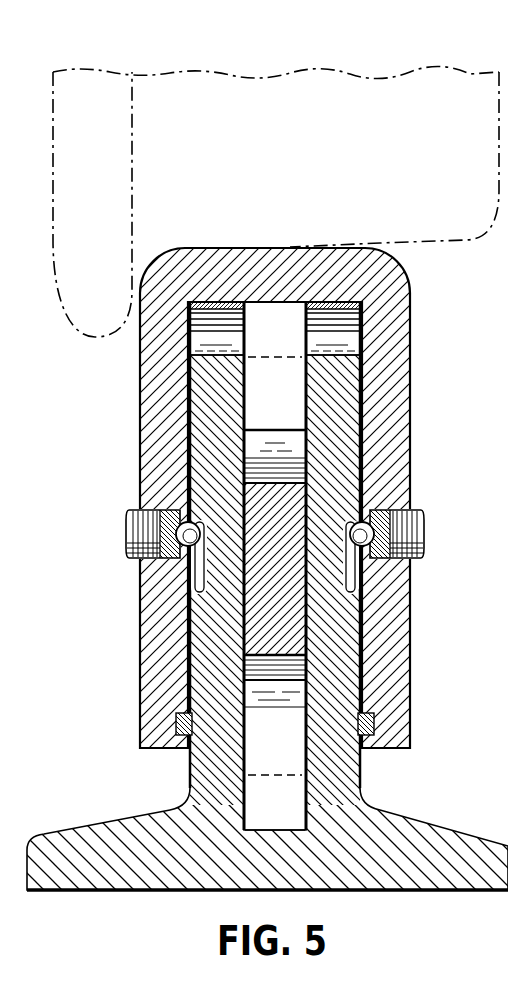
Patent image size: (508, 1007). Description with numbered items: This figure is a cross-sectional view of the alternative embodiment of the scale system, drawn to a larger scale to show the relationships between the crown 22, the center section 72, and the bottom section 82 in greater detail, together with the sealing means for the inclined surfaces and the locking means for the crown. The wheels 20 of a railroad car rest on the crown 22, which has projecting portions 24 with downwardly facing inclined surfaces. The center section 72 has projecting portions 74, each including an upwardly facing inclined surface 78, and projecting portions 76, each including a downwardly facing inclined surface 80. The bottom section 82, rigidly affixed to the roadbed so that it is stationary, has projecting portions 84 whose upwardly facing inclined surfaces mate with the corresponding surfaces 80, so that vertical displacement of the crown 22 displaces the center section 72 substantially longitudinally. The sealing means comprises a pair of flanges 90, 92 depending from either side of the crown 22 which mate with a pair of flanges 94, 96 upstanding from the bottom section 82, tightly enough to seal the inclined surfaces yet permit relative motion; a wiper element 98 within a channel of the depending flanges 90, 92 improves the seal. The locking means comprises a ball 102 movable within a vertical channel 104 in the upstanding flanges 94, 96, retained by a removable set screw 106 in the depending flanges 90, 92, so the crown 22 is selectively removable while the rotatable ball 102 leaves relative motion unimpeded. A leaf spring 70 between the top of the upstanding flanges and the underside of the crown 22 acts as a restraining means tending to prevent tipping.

The wheels 20 is at (262, 121).
The crown 22 is at (291, 258).
The projecting portions 24 is at (262, 346).
The leaf spring 70 is at (215, 334).
The center section 72 is at (258, 586).
The projecting portions 74 is at (267, 376).
The projecting portions 76 is at (283, 773).
The upwardly facing inclined surface 78 is at (277, 443).
The downwardly facing inclined surface 80 is at (275, 683).
The bottom section 82 is at (148, 873).
The projecting portions 84 is at (258, 796).
The depending flange 90 is at (158, 655).
The depending flange 92 is at (402, 633).
The upstanding flange 94 is at (206, 451).
The upstanding flange 96 is at (340, 443).
The wiper element 98 is at (186, 723).
The ball 102 is at (176, 519).
The vertical channel 104 is at (197, 575).
The set screw 106 is at (147, 534).